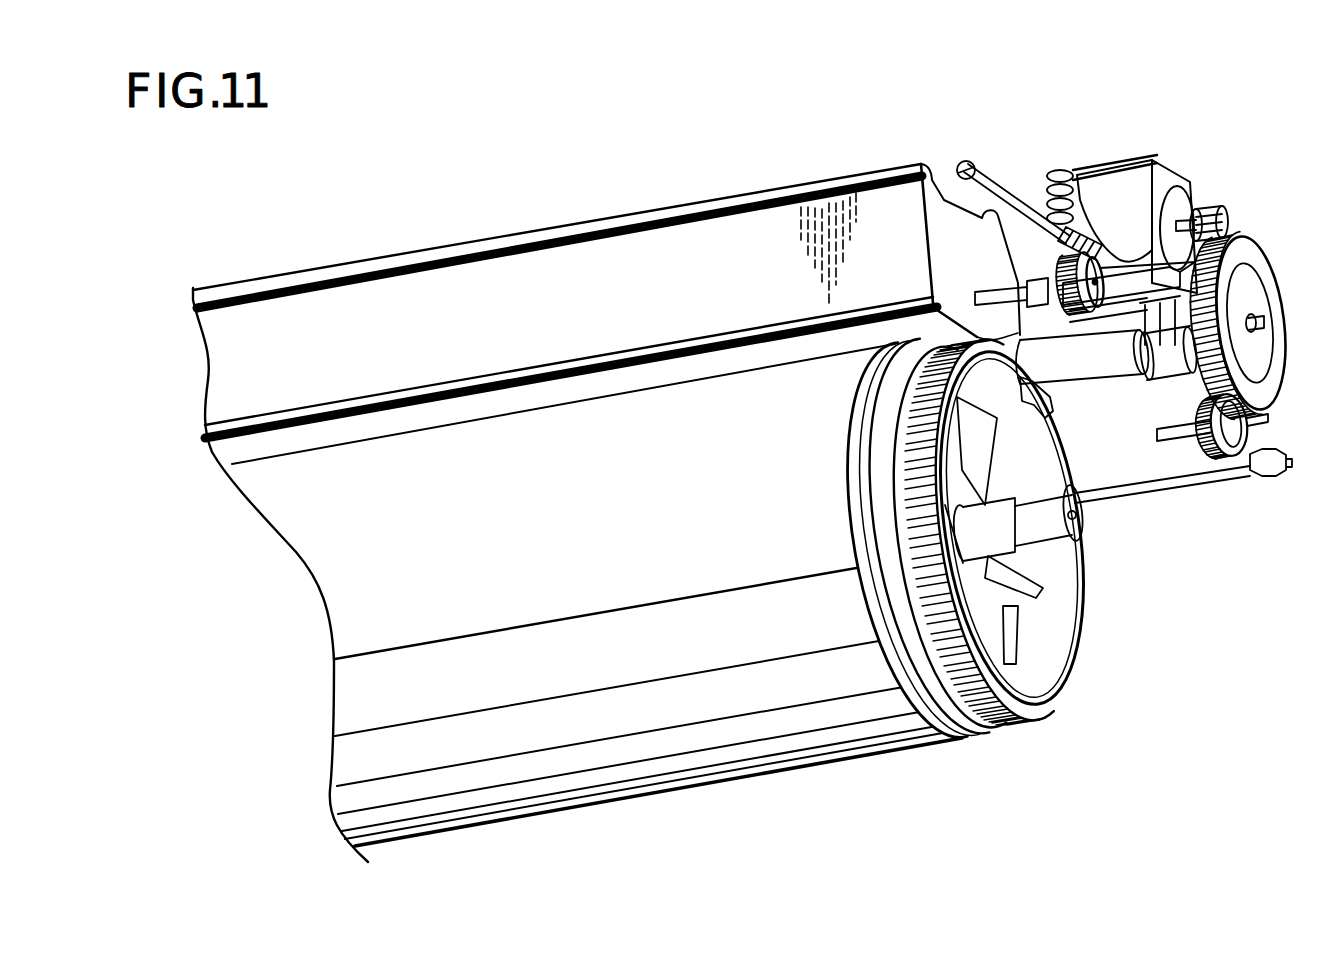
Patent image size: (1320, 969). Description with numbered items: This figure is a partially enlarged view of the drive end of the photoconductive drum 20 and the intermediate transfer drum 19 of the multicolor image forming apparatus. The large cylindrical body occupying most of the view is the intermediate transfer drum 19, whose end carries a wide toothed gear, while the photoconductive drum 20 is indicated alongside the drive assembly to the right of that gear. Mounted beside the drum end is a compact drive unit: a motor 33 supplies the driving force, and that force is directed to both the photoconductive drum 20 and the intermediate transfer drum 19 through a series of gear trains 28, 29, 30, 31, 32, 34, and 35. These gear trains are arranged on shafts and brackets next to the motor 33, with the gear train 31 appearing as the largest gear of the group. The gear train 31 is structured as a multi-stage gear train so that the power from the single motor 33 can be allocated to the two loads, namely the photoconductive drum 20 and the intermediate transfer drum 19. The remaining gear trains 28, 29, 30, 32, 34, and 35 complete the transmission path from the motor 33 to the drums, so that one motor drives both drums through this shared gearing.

The intermediate transfer drum 19 is at (880, 742).
The photoconductive drum 20 is at (1052, 405).
The gear train 28 is at (1077, 472).
The gear train 29 is at (1213, 487).
The gear train 30 is at (1249, 482).
The gear train 31 is at (1257, 232).
The gear train 32 is at (1213, 207).
The motor 33 is at (1130, 162).
The gear train 34 is at (1177, 147).
The gear train 35 is at (1058, 174).